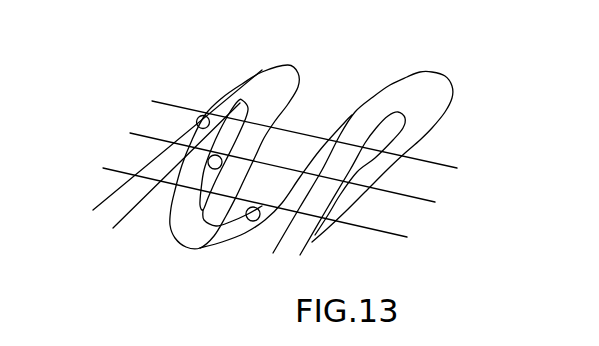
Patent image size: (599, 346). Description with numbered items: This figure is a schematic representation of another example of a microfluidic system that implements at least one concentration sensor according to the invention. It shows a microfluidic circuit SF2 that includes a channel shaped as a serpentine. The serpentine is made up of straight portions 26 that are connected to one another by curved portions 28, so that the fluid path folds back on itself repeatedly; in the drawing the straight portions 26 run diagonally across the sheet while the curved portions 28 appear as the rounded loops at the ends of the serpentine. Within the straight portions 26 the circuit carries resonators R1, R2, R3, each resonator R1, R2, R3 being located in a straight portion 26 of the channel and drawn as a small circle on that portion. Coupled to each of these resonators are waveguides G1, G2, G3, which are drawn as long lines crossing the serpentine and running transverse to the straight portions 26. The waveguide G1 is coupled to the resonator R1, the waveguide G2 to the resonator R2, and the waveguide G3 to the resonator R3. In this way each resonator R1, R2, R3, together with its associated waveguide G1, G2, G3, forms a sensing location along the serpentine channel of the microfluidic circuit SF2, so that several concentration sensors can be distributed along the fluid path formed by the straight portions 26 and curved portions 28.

The waveguide G1 is at (154, 101).
The waveguide G2 is at (435, 202).
The waveguide G3 is at (396, 237).
The resonator R1 is at (183, 120).
The resonator R2 is at (235, 166).
The resonator R3 is at (252, 243).
The straight portion 26 is at (150, 160).
The curved portion 28 is at (288, 82).
The microfluidic circuit SF2 is at (443, 54).